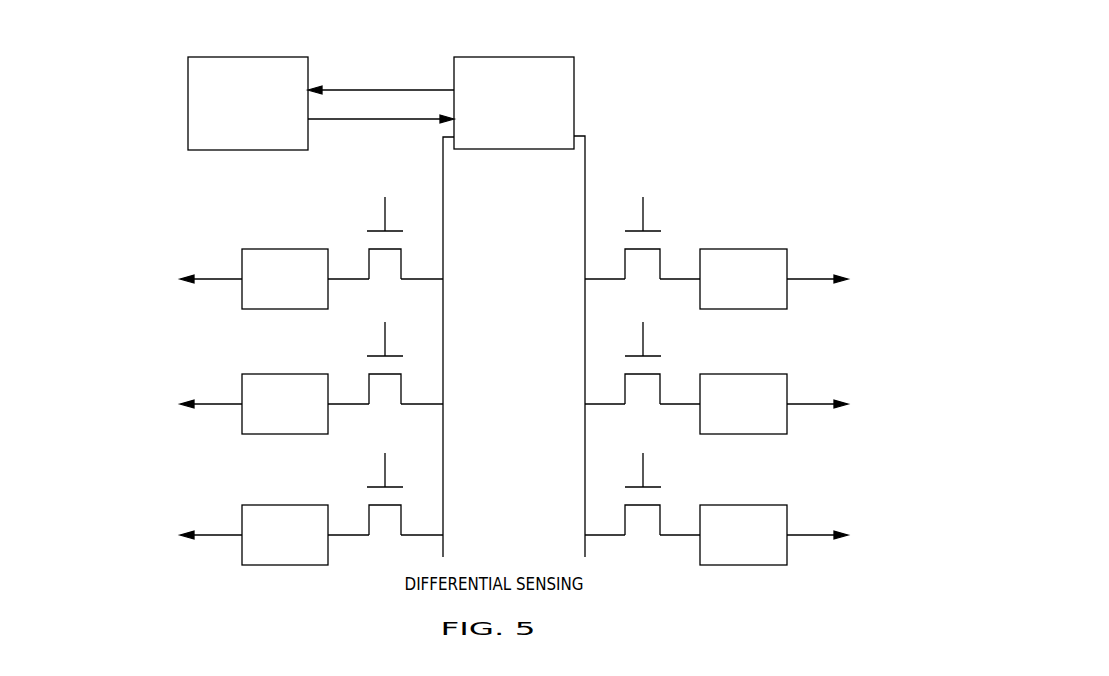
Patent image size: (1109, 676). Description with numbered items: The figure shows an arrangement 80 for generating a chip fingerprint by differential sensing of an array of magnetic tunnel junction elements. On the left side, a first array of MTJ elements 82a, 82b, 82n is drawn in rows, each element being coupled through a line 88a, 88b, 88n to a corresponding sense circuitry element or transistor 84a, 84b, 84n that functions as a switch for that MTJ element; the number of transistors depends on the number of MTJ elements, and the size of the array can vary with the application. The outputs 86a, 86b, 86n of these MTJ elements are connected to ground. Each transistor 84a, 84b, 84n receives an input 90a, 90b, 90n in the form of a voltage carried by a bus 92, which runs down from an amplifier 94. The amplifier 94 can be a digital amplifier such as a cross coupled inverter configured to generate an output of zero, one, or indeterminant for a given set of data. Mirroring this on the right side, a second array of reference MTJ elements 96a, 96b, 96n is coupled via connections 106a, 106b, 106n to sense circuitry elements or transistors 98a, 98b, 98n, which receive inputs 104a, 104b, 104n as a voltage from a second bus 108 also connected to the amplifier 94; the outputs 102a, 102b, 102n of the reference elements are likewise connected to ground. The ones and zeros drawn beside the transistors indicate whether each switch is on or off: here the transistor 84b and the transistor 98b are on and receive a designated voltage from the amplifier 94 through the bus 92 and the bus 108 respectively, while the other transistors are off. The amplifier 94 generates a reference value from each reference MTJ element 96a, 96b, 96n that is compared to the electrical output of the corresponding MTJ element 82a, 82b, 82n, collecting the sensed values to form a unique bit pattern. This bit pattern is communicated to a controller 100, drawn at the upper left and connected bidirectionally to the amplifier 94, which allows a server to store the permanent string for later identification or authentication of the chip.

The arrangement 80 is at (718, 90).
The magnetic tunnel junction element 82a is at (272, 249).
The magnetic tunnel junction element 82b is at (272, 374).
The magnetic tunnel junction element 82n is at (272, 505).
The sense circuitry element or transistor 84a is at (401, 248).
The sense circuitry element or transistor 84b is at (401, 373).
The sense circuitry element or transistor 84n is at (401, 504).
The output 86a is at (211, 278).
The output 86b is at (211, 403).
The output 86n is at (211, 534).
The line 88a is at (353, 278).
The line 88b is at (353, 403).
The line 88n is at (353, 534).
The input 90a is at (438, 278).
The input 90b is at (438, 403).
The input 90n is at (438, 534).
The bus 92 is at (440, 150).
The amplifier 94 is at (574, 82).
The reference MTJ element 96a is at (752, 249).
The reference MTJ element 96b is at (752, 374).
The reference MTJ element 96n is at (752, 505).
The sense circuitry element or transistor 98a is at (650, 229).
The sense circuitry element or transistor 98b is at (660, 372).
The sense circuitry element or transistor 98n is at (658, 537).
The controller 100 is at (290, 57).
The output 102a is at (818, 278).
The output 102b is at (818, 403).
The output 102n is at (818, 534).
The input 104a is at (592, 278).
The input 104b is at (592, 403).
The input 104n is at (592, 534).
The coupling line 106a is at (673, 278).
The coupling line 106b is at (685, 405).
The coupling line 106n is at (673, 534).
The bus 108 is at (586, 135).